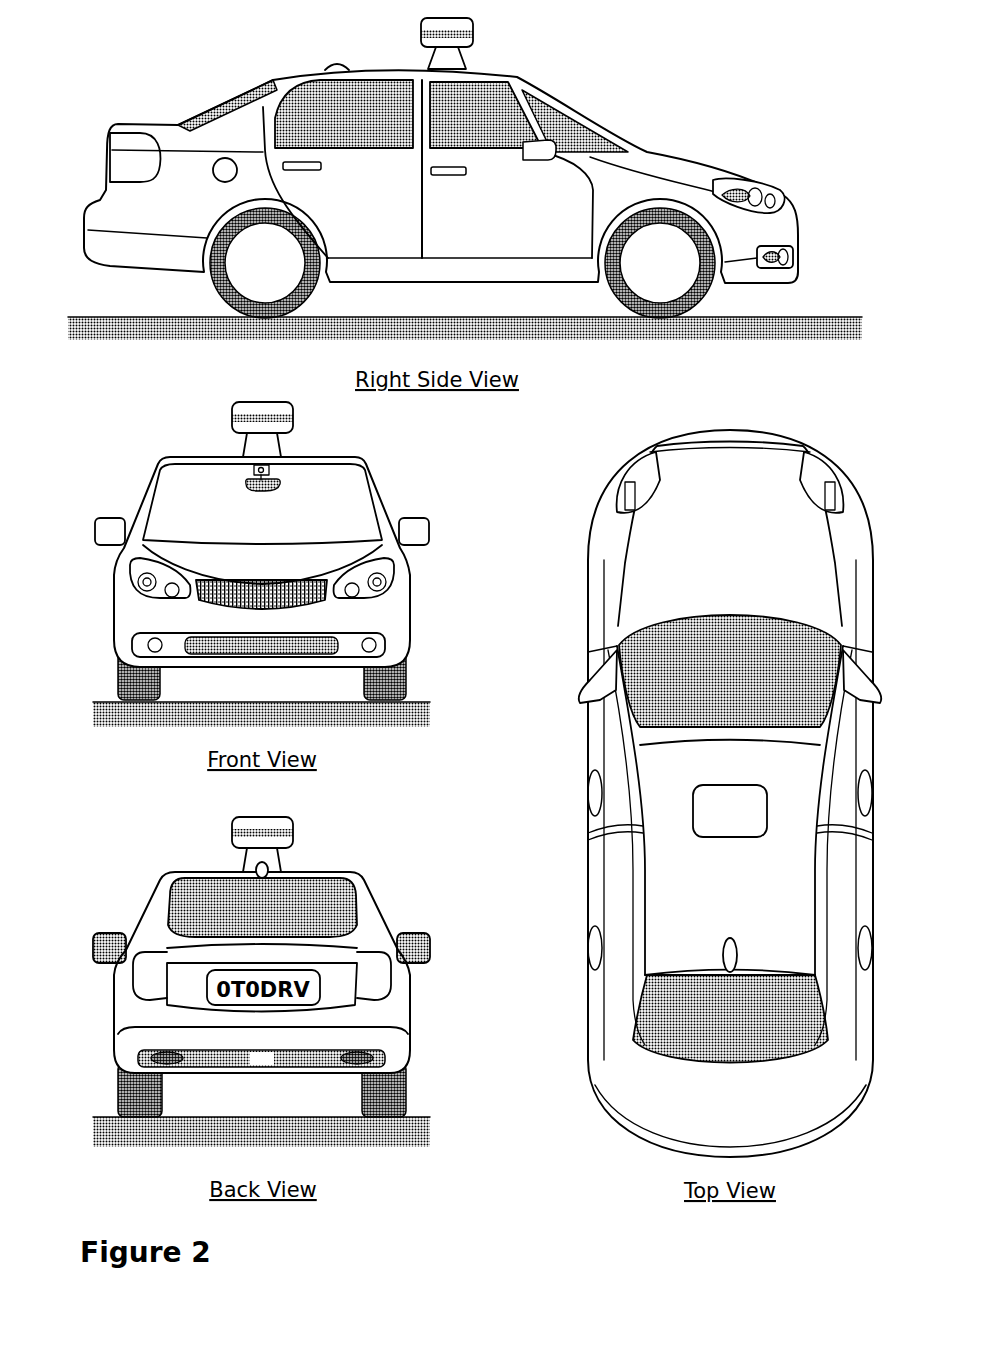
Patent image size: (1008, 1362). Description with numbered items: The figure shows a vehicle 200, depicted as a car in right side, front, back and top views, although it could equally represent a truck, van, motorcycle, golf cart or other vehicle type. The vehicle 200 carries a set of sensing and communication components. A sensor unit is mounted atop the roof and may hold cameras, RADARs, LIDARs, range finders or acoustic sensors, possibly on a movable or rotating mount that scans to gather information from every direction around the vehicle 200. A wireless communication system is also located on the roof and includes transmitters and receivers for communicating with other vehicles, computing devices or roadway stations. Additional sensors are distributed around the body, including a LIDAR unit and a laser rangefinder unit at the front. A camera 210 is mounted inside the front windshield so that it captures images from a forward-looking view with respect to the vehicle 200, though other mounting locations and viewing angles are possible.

The vehicle 200 is at (82, 116).
The camera 210 is at (272, 467).